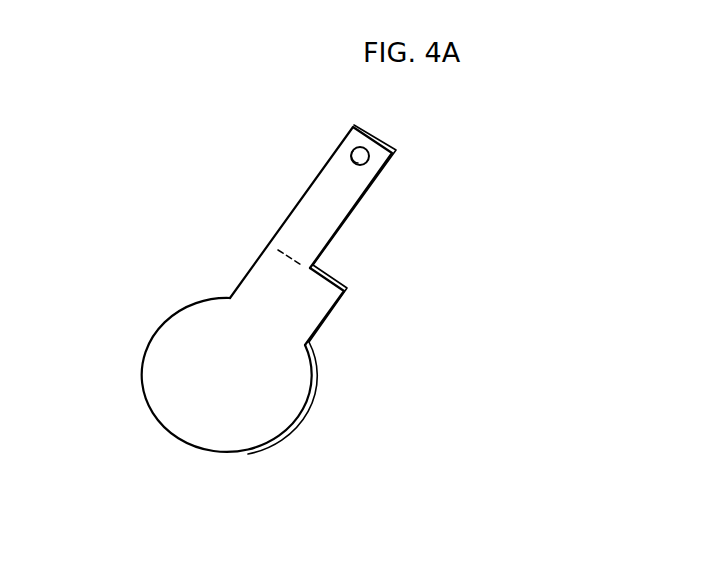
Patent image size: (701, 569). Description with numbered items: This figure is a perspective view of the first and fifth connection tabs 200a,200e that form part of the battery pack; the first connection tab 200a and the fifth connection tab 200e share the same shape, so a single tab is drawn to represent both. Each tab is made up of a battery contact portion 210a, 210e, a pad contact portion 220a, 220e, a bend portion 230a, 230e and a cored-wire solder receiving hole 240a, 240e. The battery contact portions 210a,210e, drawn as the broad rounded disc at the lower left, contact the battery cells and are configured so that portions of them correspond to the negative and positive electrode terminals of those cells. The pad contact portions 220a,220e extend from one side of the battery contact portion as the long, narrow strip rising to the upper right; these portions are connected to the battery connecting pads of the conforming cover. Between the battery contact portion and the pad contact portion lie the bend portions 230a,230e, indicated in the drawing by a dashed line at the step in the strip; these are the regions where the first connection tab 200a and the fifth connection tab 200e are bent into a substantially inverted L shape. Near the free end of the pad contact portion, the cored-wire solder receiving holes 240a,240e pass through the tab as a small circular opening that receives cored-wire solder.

The first and fifth connection tabs 200a,200e is at (287, 289).
The first connection tab 200a is at (287, 289).
The fifth connection tab 200e is at (147, 219).
The battery contact portions 210a,210e is at (197, 357).
The battery contact portion 210a is at (197, 357).
The battery contact portion 210e is at (187, 340).
The pad contact portions 220a,220e is at (294, 211).
The pad contact portion 220a is at (294, 211).
The pad contact portion 220e is at (310, 208).
The bend portions 230a,230e is at (384, 295).
The bend portion 230a is at (384, 295).
The bend portion 230e is at (292, 259).
The cored-wire solder receiving holes 240a,240e is at (447, 172).
The cored-wire solder receiving hole 240a is at (447, 172).
The cored-wire solder receiving hole 240e is at (365, 163).